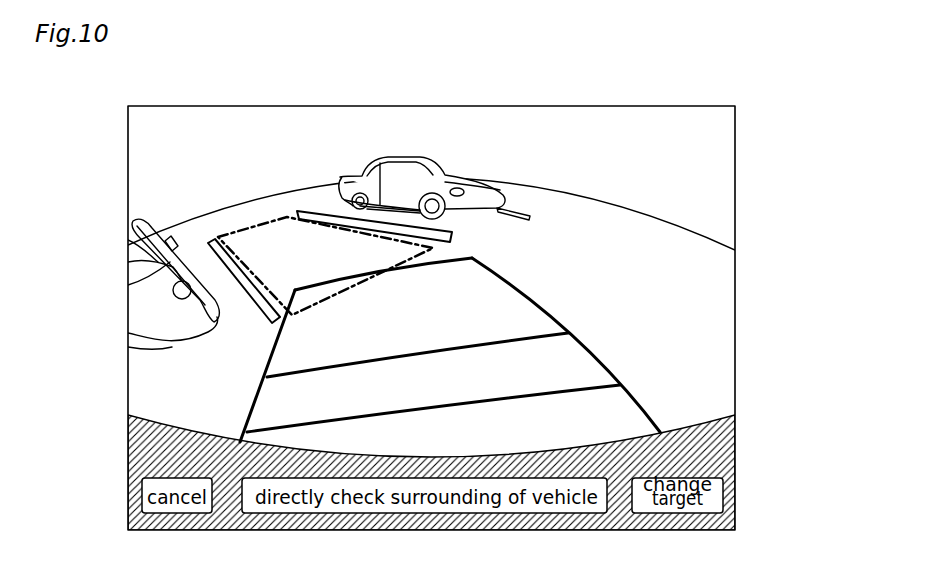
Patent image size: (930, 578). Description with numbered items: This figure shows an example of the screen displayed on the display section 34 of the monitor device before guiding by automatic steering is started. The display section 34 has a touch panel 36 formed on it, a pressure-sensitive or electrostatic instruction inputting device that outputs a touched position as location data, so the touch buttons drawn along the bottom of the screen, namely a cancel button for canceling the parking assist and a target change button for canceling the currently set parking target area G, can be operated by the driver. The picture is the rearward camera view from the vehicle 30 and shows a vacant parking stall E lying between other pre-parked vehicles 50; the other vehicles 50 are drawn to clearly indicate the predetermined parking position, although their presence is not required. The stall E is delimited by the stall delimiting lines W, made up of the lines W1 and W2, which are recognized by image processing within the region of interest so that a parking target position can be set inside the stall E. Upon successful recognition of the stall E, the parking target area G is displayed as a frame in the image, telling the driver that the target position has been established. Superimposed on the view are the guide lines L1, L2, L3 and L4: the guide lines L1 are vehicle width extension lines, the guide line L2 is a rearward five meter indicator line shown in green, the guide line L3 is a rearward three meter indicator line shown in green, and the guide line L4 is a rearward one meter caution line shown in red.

The other vehicle 50 is at (500, 193).
The stall delimiting line W1 is at (448, 238).
The stall delimiting line W2 is at (212, 246).
The stall delimiting lines W is at (359, 238).
The parking stall E is at (275, 240).
The parking target area G is at (288, 213).
The guide line L1 is at (588, 350).
The guide line L2 is at (404, 268).
The guide line L3 is at (400, 357).
The guide line L4 is at (545, 398).
The vehicle 30 is at (705, 415).
The display section 34 is at (737, 350).
The touch panel 36 is at (478, 318).